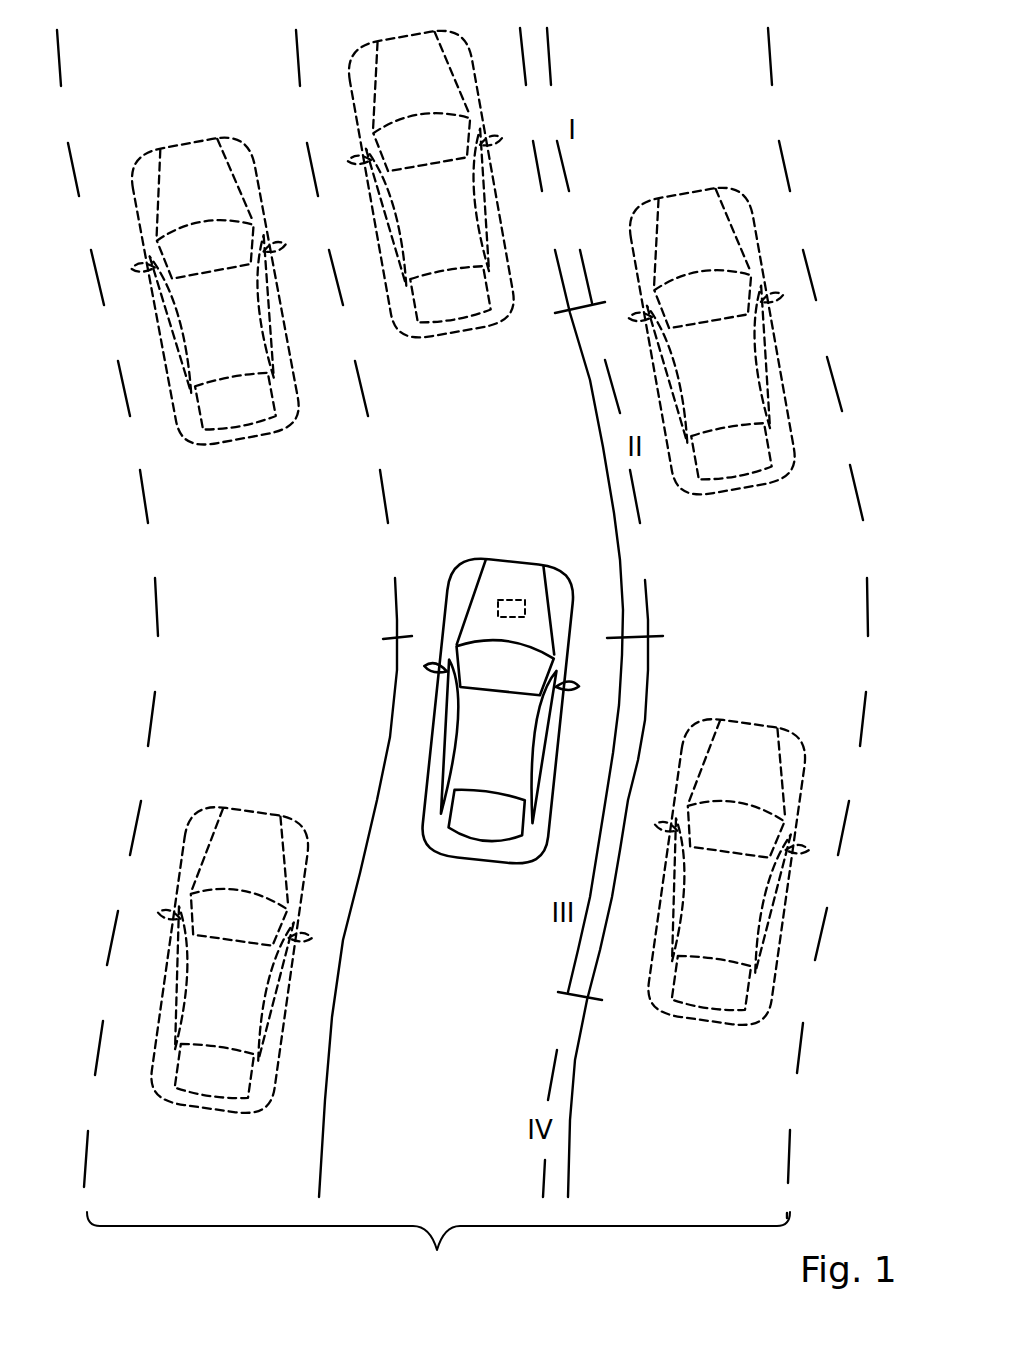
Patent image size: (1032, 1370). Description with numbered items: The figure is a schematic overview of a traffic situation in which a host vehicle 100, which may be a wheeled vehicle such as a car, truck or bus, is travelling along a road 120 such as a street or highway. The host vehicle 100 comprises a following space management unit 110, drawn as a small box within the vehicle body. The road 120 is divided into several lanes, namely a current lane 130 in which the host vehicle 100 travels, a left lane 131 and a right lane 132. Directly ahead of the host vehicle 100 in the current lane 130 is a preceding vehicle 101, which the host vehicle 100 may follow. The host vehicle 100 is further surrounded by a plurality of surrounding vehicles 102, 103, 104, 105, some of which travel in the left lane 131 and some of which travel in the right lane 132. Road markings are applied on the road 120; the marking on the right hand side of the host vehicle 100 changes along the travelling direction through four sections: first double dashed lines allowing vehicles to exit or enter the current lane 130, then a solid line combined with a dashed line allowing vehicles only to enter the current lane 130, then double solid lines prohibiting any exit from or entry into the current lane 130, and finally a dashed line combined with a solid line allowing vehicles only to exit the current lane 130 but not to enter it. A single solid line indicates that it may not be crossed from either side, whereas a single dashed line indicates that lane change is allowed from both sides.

The host vehicle 100 is at (452, 861).
The preceding vehicle 101 is at (443, 340).
The surrounding vehicle 102 is at (740, 498).
The surrounding vehicle 103 is at (262, 440).
The surrounding vehicle 104 is at (193, 1104).
The surrounding vehicle 105 is at (703, 1024).
The following space management unit 110 is at (510, 600).
The road 120 is at (438, 1246).
The current lane 130 is at (342, 1184).
The left lane 131 is at (251, 1182).
The right lane 132 is at (596, 1186).